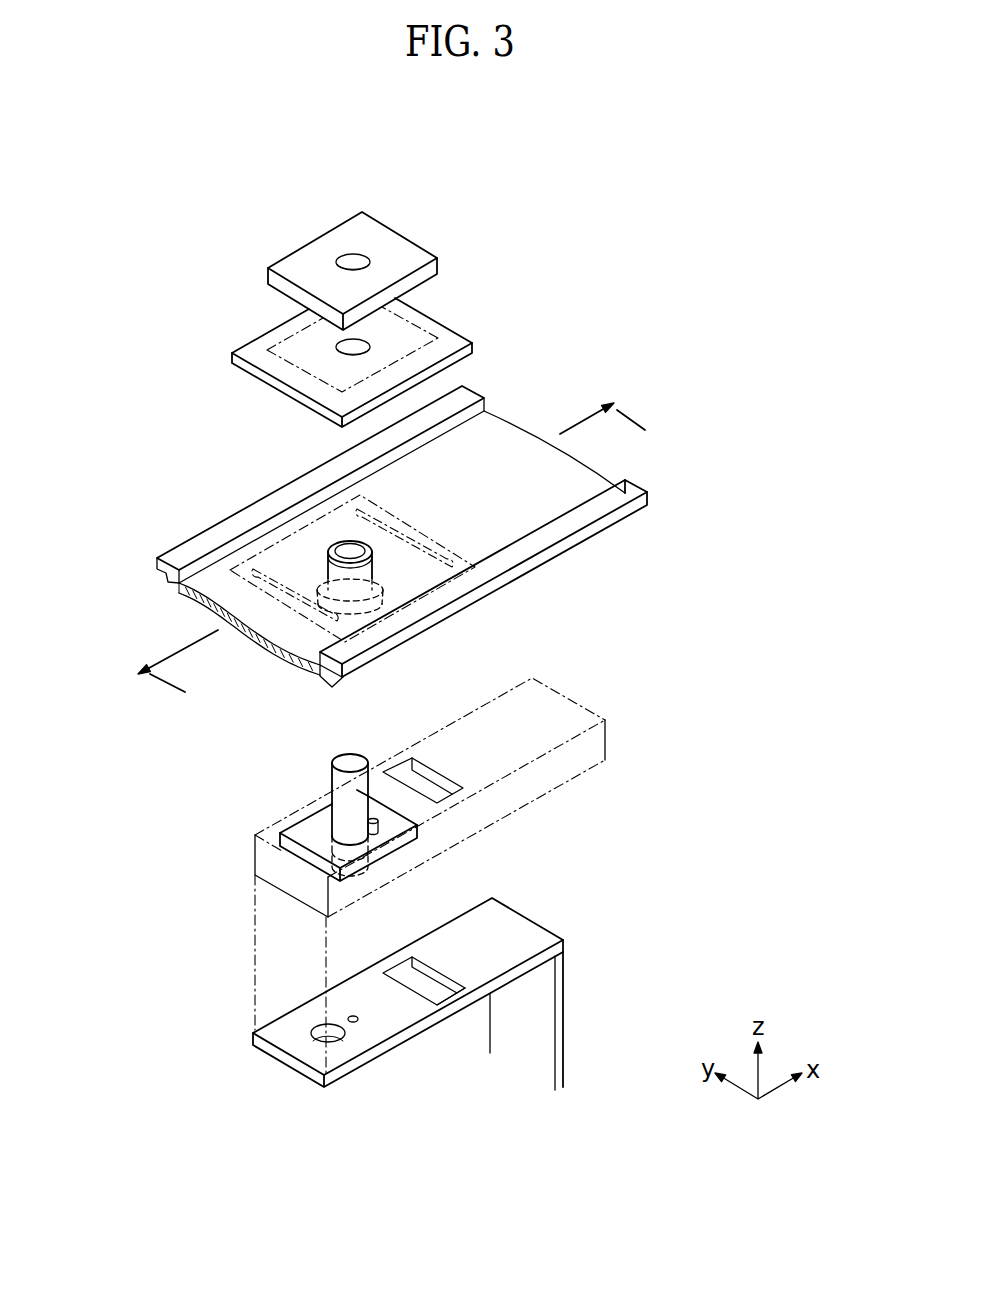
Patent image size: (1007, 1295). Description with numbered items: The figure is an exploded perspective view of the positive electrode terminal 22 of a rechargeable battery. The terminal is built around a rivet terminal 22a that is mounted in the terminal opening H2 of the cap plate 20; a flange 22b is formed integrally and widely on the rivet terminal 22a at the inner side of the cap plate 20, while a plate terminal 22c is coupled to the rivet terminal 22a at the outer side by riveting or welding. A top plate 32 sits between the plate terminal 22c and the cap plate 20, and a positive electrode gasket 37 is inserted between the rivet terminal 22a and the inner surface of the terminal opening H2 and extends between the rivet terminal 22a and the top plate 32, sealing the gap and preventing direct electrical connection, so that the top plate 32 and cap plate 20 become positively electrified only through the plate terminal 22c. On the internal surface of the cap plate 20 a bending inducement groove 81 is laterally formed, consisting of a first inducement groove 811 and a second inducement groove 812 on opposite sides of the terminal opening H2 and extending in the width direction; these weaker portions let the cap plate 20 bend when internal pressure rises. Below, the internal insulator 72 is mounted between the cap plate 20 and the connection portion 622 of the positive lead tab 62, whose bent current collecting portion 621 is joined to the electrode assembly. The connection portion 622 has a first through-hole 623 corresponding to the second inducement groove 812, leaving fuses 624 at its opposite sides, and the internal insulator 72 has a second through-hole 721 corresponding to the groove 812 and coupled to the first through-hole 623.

The positive electrode terminal 22 is at (384, 246).
The rivet terminal 22a is at (347, 788).
The flange 22b is at (313, 840).
The plate terminal 22c is at (380, 238).
The top plate 32 is at (448, 340).
The cap plate 20 is at (378, 549).
The bending inducement groove 81 is at (276, 536).
The first inducement groove 811 is at (262, 567).
The second inducement groove 812 is at (357, 513).
The positive electrode gasket 37 is at (372, 607).
The terminal opening H2 is at (352, 556).
The internal insulator 72 is at (476, 797).
The second through-hole 721 is at (437, 777).
The positive lead tab 62 is at (446, 1029).
The current collecting portion 621 is at (555, 1055).
The connection portion 622 is at (388, 1025).
The first through-hole 623 is at (437, 975).
The fuses 624 is at (452, 994).